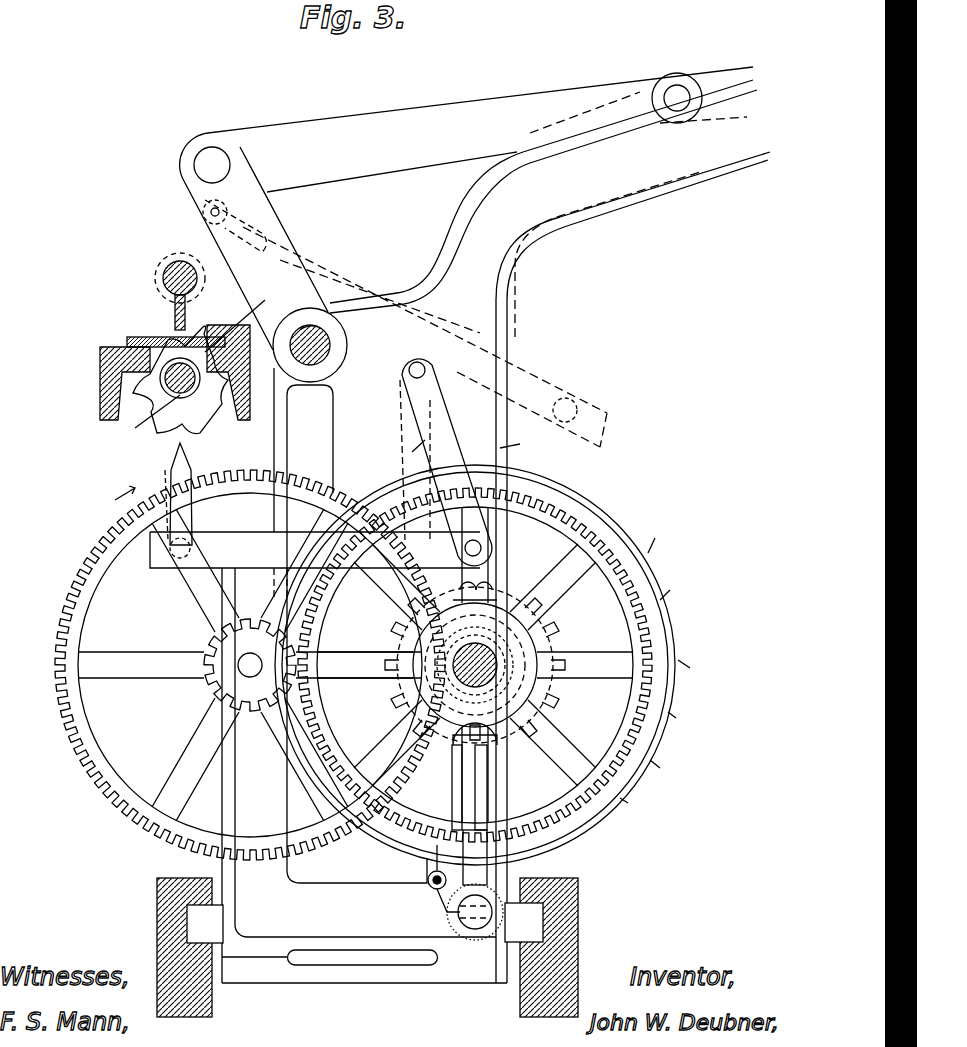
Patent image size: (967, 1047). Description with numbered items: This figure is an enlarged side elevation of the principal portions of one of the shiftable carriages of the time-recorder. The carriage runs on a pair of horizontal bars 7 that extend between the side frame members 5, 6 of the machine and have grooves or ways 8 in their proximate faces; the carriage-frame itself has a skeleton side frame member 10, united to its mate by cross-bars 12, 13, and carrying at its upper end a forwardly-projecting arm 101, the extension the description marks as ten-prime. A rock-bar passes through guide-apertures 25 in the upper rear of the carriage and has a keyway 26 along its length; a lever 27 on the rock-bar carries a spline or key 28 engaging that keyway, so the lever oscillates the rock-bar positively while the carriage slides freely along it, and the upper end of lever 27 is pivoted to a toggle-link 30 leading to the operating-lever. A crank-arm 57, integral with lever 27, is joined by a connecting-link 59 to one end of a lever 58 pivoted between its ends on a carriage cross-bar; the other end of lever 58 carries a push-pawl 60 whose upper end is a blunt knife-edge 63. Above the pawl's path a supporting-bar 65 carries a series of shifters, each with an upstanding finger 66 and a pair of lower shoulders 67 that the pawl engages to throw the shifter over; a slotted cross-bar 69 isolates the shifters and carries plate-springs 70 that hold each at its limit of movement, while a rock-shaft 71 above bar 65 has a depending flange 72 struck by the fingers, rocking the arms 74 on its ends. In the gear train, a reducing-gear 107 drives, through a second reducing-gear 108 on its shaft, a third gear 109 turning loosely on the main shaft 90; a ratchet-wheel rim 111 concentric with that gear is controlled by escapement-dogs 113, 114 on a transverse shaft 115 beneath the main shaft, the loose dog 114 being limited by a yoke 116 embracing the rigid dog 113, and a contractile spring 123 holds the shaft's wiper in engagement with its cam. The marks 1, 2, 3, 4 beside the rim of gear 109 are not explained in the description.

The rim segment 1 is at (656, 549).
The rim segment 2 is at (672, 600).
The rim segment 3 is at (684, 657).
The rim segment 4 is at (676, 710).
The side frame member 5 is at (658, 763).
The side frame member 6 is at (626, 800).
The bar 7 is at (587, 855).
The groove or way 8 is at (590, 905).
The side frame member 10 is at (521, 444).
The cross-bar 12 is at (245, 660).
The cross-bar 13 is at (475, 945).
The guide-aperture 25 is at (345, 350).
The keyway 26 is at (455, 300).
The lever 27 is at (278, 210).
The spline or key 28 is at (372, 268).
The toggle-link 30 is at (466, 129).
The crank-arm 57 is at (395, 370).
The lever 58 is at (315, 550).
The connecting-link 59 is at (402, 452).
The push-pawl 60 is at (170, 486).
The blunt knife-edge 63 is at (170, 460).
The supporting-bar 65 is at (190, 385).
The finger 66 is at (244, 317).
The shoulder 67 is at (212, 440).
The cross-bar 69 is at (105, 372).
The plate-spring 70 is at (165, 337).
The rock-shaft 71 is at (163, 273).
The depending flange 72 is at (185, 310).
The arm 74 is at (200, 232).
The main shaft 90 is at (505, 650).
The forwardly-projecting arm 101 is at (710, 182).
The reducing-gear 107 is at (85, 725).
The second reducing-gear 108 is at (212, 688).
The third gear 109 is at (600, 655).
The ratchet-wheel rim 111 is at (556, 695).
The controlling-dog 113 is at (480, 800).
The controlling-dog 114 is at (456, 790).
The shaft 115 is at (475, 920).
The yoke 116 is at (462, 860).
The contractile spring 123 is at (430, 900).